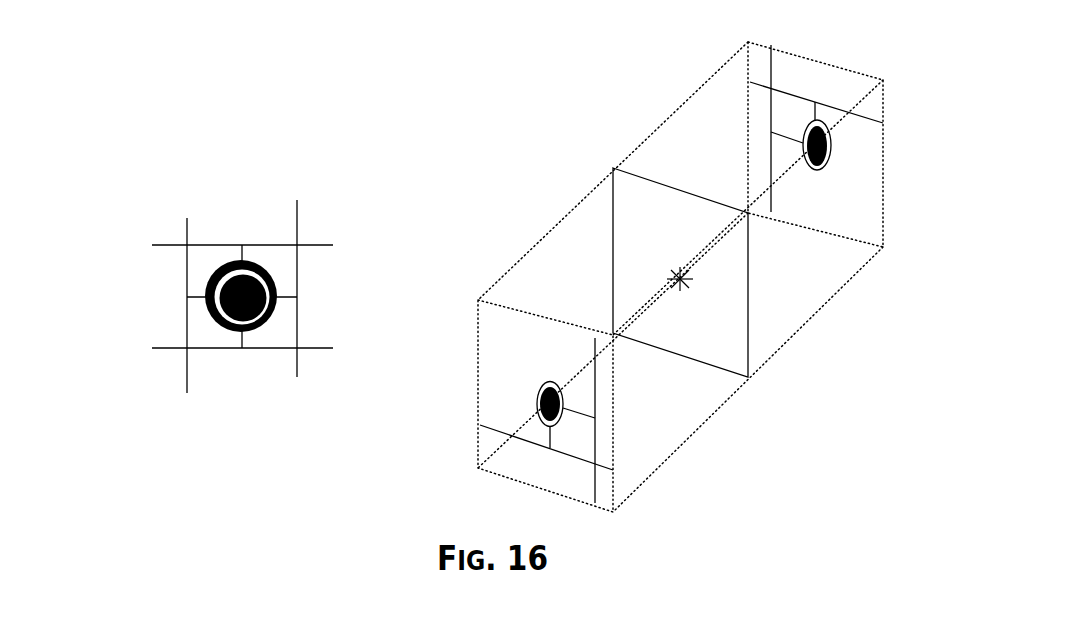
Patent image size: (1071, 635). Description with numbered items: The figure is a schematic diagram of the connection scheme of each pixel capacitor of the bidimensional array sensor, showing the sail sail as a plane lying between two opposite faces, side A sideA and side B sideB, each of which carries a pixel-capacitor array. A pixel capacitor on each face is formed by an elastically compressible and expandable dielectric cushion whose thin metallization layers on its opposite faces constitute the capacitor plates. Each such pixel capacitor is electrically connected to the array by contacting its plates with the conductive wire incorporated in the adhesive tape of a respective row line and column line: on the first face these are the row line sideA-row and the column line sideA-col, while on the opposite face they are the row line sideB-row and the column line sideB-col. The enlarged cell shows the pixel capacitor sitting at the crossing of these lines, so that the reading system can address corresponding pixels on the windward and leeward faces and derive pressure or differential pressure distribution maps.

The side A of the sail sideA is at (581, 406).
The side B of the sail sideB is at (844, 155).
The element sail is at (703, 284).
The row line of side A sideA-row is at (287, 350).
The column line of side A sideA-col is at (293, 298).
The row line of side B sideB-row is at (193, 243).
The column line of side B sideB-col is at (196, 294).